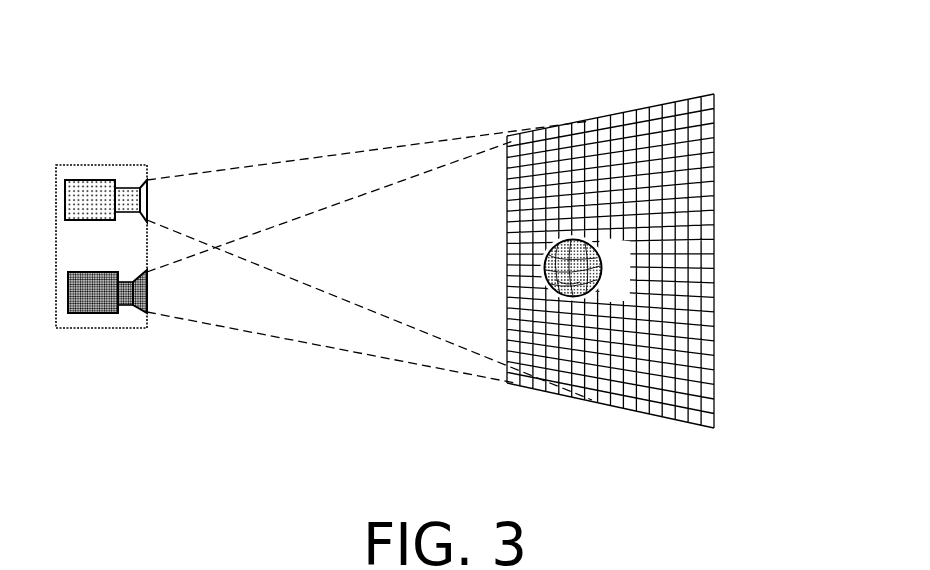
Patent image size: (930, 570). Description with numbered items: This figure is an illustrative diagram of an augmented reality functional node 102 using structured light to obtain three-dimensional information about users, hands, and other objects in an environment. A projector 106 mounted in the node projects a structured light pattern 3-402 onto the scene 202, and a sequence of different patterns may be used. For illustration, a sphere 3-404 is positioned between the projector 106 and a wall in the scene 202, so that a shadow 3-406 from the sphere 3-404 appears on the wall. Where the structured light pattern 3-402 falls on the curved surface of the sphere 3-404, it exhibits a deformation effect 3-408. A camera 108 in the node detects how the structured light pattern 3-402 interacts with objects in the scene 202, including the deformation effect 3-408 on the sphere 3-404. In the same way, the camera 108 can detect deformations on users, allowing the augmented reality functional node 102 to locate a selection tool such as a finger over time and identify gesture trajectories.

The augmented reality functional node 102 is at (85, 330).
The projector 106 is at (90, 200).
The camera 108 is at (105, 295).
The scene 202 is at (728, 428).
The structured light pattern 3-402 is at (510, 155).
The sphere 3-404 is at (568, 238).
The shadow 3-406 is at (616, 255).
The deformation effect 3-408 is at (555, 282).